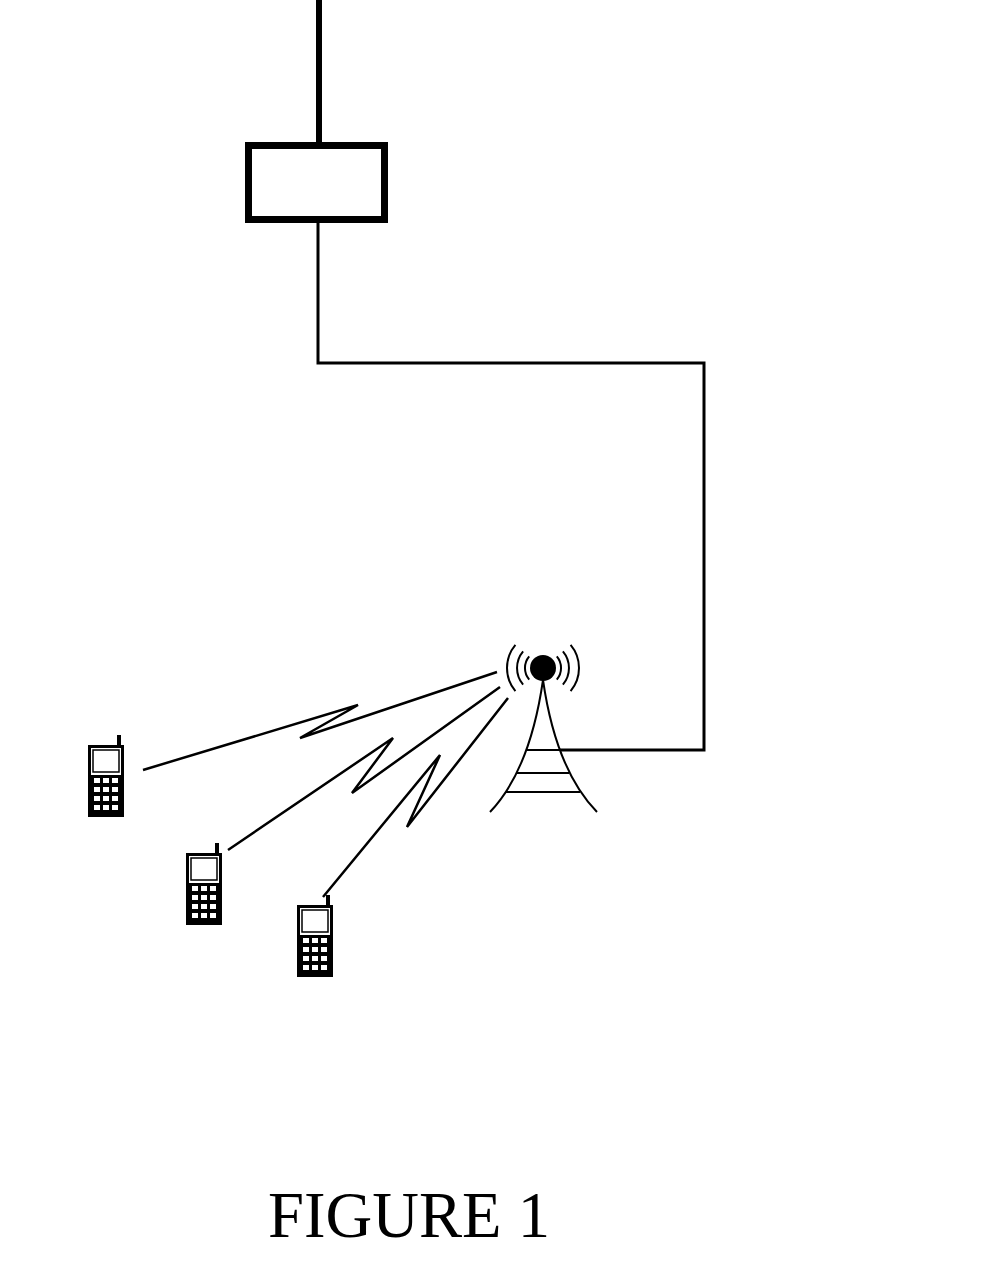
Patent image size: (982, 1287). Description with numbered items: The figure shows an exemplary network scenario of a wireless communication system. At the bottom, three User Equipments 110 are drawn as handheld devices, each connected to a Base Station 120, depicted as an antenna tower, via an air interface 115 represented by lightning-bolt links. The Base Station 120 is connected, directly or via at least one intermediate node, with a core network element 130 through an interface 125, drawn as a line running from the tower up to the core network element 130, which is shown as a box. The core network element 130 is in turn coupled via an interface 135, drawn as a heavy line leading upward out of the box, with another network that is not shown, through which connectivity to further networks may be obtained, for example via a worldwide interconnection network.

The User Equipment 110 is at (113, 816).
The air interface 115 is at (320, 712).
The Base Station 120 is at (582, 785).
The interface 125 is at (704, 513).
The core network element 130 is at (346, 199).
The interface 135 is at (321, 57).